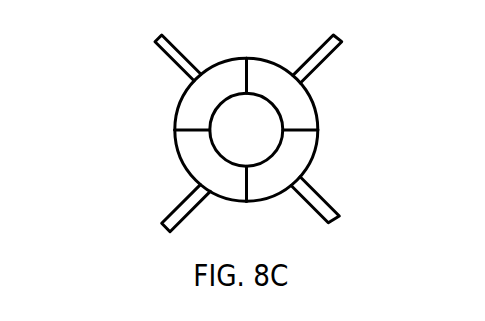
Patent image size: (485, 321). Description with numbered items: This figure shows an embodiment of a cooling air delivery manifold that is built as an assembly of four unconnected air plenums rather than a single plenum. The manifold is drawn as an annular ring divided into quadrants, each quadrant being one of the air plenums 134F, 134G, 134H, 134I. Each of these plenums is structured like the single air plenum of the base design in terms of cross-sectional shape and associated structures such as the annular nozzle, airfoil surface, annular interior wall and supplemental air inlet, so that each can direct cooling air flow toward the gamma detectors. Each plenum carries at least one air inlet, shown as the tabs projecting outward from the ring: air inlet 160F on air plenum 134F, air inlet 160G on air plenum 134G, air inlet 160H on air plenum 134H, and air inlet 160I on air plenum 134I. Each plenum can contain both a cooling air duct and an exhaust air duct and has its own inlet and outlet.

The air plenum 134F is at (190, 107).
The air plenum 134G is at (305, 108).
The air plenum 134H is at (298, 163).
The air plenum 134I is at (191, 162).
The air inlet 160F is at (165, 48).
The air inlet 160G is at (320, 55).
The air inlet 160H is at (323, 212).
The air inlet 160I is at (170, 213).